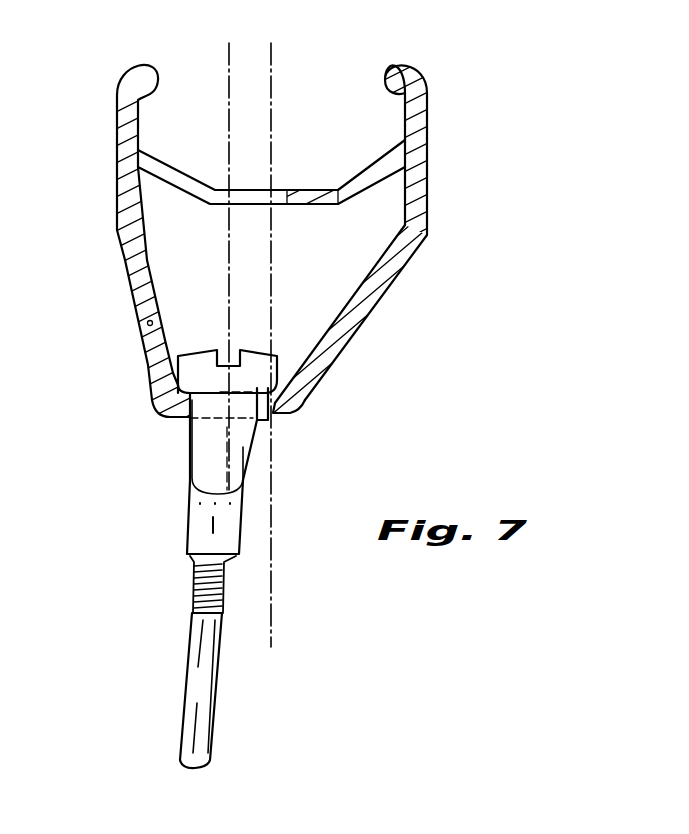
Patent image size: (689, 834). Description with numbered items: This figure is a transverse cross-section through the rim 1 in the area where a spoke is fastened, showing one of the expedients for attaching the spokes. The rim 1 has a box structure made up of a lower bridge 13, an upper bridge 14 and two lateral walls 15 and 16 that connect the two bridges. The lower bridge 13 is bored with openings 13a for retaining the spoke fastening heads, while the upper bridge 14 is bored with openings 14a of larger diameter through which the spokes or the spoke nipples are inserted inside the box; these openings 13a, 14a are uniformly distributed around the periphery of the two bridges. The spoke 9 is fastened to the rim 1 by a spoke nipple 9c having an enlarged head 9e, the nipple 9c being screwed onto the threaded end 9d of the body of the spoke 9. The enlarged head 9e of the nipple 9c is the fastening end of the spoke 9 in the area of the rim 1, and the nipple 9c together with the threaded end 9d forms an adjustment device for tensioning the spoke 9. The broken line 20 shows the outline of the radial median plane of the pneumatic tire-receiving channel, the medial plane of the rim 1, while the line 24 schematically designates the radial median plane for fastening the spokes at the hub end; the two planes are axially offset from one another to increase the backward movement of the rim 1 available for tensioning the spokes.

The rim 1 is at (433, 182).
The spoke 9 is at (197, 687).
The spoke nipple 9c is at (203, 462).
The threaded end 9d is at (190, 590).
The enlarged head 9e is at (147, 408).
The lower bridge 13 is at (290, 403).
The opening 13a is at (258, 390).
The upper bridge 14 is at (340, 187).
The opening 14a is at (285, 190).
The lateral wall 15 is at (147, 323).
The lateral wall 16 is at (360, 320).
The broken line 20 is at (274, 83).
The radial median plane for fastening the spokes 24 is at (230, 88).